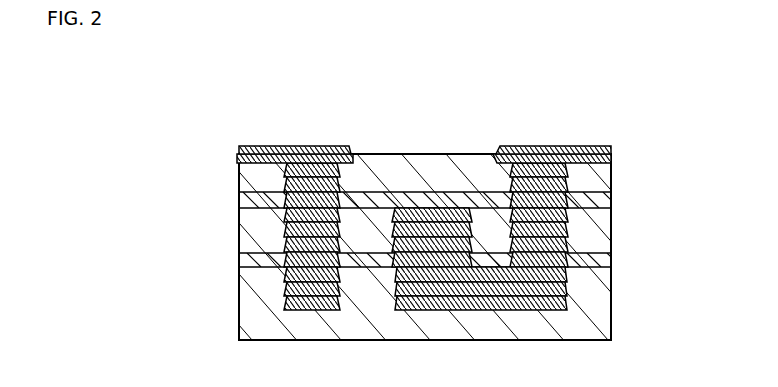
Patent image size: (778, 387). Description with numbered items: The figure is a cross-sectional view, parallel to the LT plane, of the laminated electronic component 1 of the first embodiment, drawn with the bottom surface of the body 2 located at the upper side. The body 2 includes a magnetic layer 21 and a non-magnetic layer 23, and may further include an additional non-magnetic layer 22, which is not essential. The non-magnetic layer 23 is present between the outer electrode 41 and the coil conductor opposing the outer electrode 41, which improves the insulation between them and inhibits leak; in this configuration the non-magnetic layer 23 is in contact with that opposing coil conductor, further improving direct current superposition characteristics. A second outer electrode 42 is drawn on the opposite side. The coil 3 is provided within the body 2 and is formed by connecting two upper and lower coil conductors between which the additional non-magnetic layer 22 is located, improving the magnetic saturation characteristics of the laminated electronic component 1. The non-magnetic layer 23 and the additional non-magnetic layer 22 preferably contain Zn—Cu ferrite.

The laminated electronic component 1 is at (434, 203).
The body 2 is at (434, 247).
The coil 3 is at (565, 213).
The magnetic layer 21 is at (177, 198).
The additional non-magnetic layer 22 is at (240, 253).
The non-magnetic layer 23 is at (240, 200).
The outer electrode 41 is at (238, 150).
The second external electrode 42 is at (611, 148).